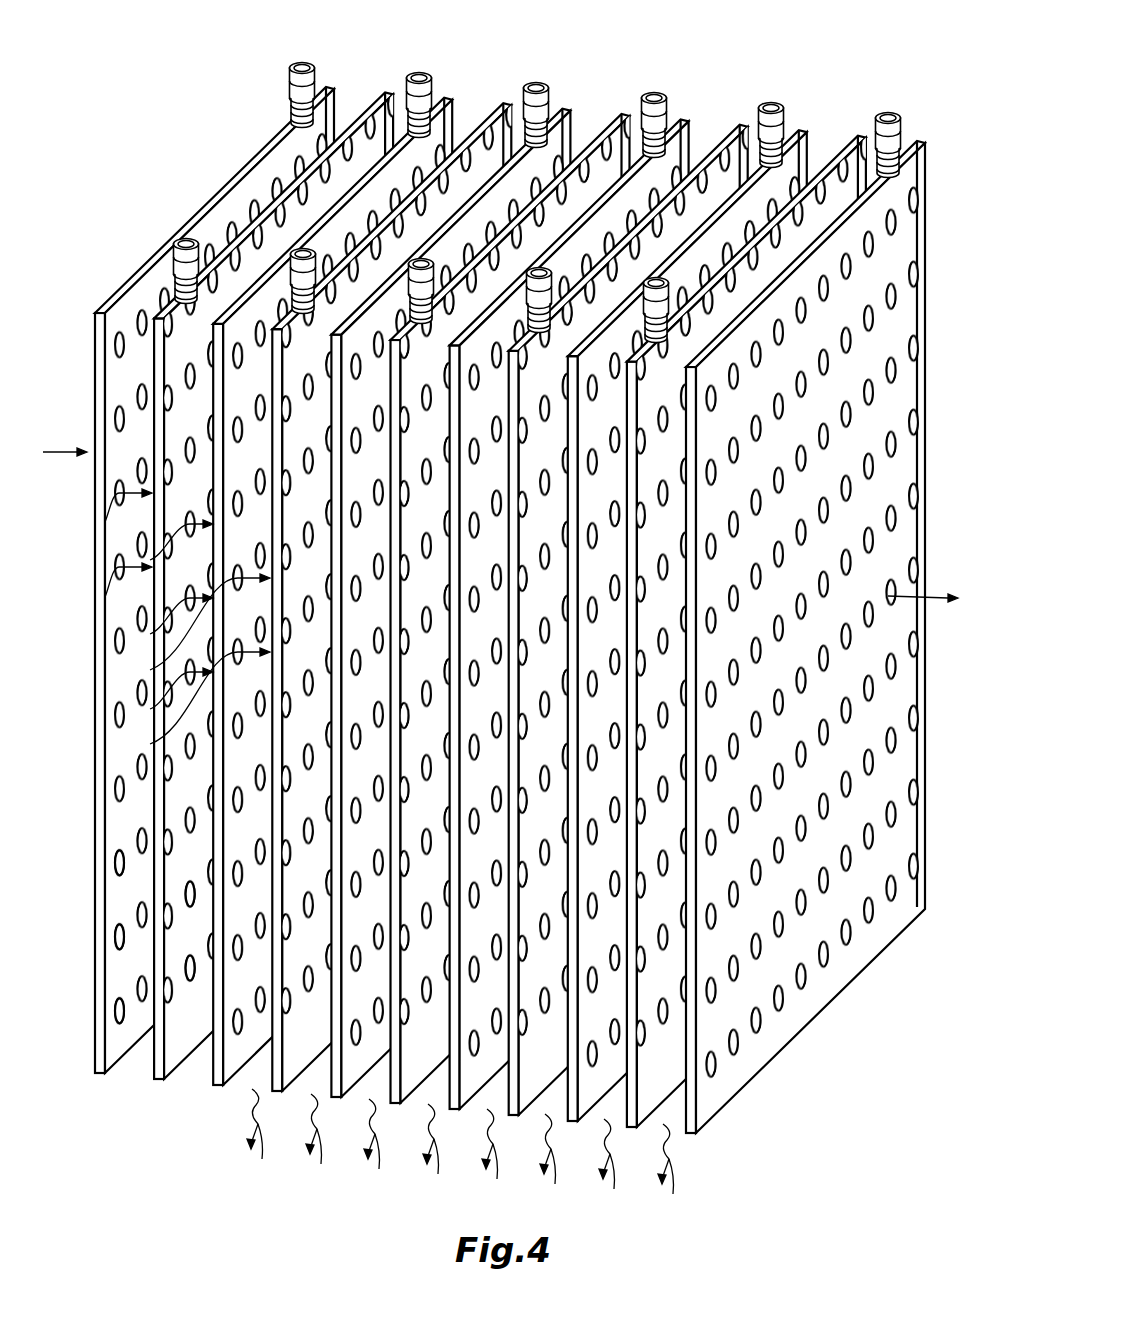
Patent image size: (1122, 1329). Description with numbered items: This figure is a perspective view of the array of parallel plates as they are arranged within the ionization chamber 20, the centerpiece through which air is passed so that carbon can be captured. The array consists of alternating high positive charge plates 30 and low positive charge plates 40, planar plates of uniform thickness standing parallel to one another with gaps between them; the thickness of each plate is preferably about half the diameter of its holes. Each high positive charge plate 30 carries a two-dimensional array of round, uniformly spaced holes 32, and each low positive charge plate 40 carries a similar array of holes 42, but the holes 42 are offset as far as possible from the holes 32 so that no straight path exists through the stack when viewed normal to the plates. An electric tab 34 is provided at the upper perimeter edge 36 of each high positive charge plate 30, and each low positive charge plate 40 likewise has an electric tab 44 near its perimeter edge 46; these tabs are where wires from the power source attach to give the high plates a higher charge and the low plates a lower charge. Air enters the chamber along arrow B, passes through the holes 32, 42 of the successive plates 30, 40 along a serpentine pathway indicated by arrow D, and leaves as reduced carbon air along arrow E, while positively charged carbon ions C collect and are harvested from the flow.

The ionization chamber 20 is at (221, 81).
The high positive charge plate 30 is at (200, 551).
The holes 32 is at (118, 866).
The electric tab 34 is at (297, 62).
The upper perimeter edge 36 is at (336, 97).
The low positive charge plate 40 is at (284, 587).
The holes 42 is at (196, 894).
The electric tab 44 is at (185, 238).
The perimeter edge 46 is at (372, 113).
The arrow B is at (60, 448).
The carbon ions C is at (463, 1154).
The arrow D is at (105, 522).
The arrow E is at (936, 594).